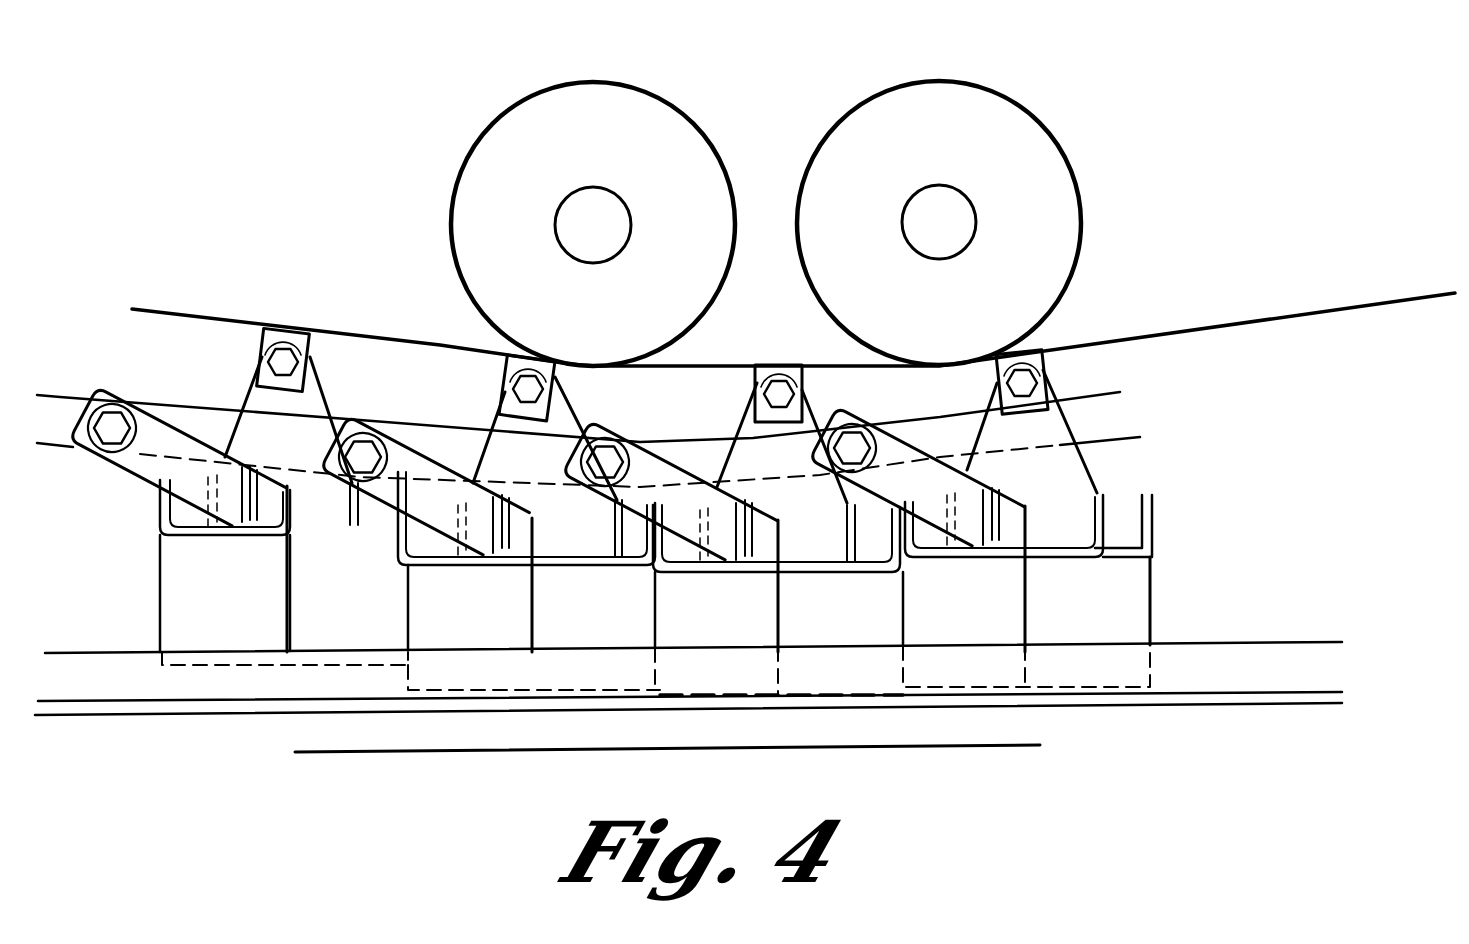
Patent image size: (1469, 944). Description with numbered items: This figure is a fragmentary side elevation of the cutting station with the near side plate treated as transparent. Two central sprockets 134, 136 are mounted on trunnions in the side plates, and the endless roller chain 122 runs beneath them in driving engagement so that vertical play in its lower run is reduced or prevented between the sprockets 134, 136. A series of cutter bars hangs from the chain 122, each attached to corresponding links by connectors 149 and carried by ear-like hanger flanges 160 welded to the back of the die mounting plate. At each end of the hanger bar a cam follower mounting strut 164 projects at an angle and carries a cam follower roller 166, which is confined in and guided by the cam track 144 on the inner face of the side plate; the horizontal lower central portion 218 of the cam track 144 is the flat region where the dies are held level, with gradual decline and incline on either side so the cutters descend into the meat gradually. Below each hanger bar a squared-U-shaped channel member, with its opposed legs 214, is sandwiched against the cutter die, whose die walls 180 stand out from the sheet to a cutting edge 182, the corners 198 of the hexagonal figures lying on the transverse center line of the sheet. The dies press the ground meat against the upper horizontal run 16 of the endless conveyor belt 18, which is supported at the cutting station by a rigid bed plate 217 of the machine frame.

The sprocket 136 is at (686, 113).
The sprocket 134 is at (1023, 105).
The endless roller chain 122 is at (704, 362).
The cam track 144 is at (1095, 418).
The hanger flange 160 is at (315, 402).
The connector 149 is at (548, 378).
The horizontal lower central portion of cam track 218 is at (705, 448).
The die wall 180 is at (167, 561).
The cam follower mounting strut 164 is at (370, 426).
The cam follower roller 166 is at (612, 452).
The corner 198 is at (290, 560).
The leg 214 is at (1156, 516).
The cutting edge 182 is at (198, 665).
The upper horizontal run of conveyor belt 16 is at (758, 695).
The endless conveyor belt 18 is at (1207, 698).
The bed plate 217 is at (967, 728).